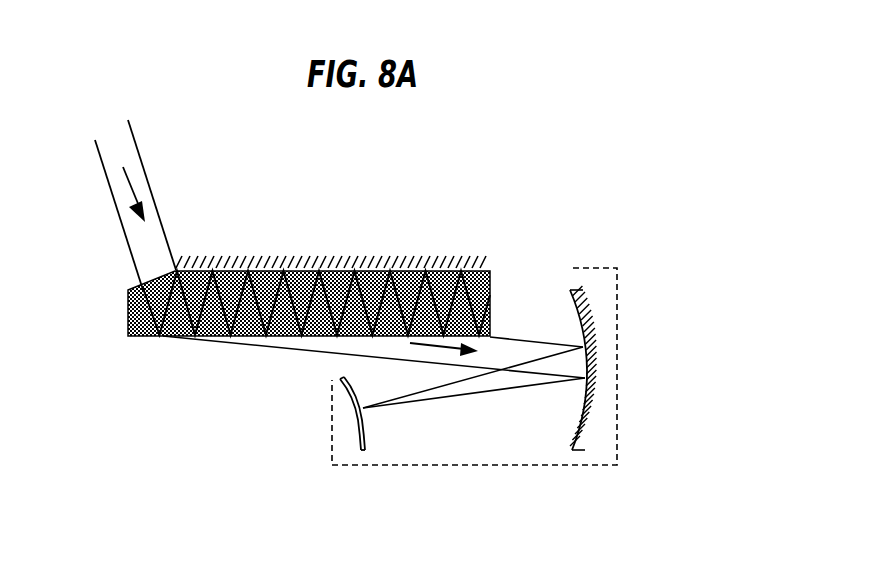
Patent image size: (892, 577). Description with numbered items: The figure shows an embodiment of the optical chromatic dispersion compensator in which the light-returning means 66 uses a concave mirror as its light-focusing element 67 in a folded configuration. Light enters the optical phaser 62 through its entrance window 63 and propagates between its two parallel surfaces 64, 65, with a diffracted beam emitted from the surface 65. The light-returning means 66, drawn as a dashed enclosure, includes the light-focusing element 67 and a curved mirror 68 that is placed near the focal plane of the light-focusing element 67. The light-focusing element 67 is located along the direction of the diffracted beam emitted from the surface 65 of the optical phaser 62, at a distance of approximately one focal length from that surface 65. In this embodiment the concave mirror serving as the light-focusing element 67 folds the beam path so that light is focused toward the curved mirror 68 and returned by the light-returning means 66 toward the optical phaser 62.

The optical phaser 62 is at (270, 272).
The entrance window 63 is at (128, 318).
The parallel surface 64 is at (343, 266).
The parallel surface 65 is at (281, 339).
The light-returning means 66 is at (599, 262).
The light-focusing element 67 is at (596, 378).
The curved mirror 68 is at (357, 420).